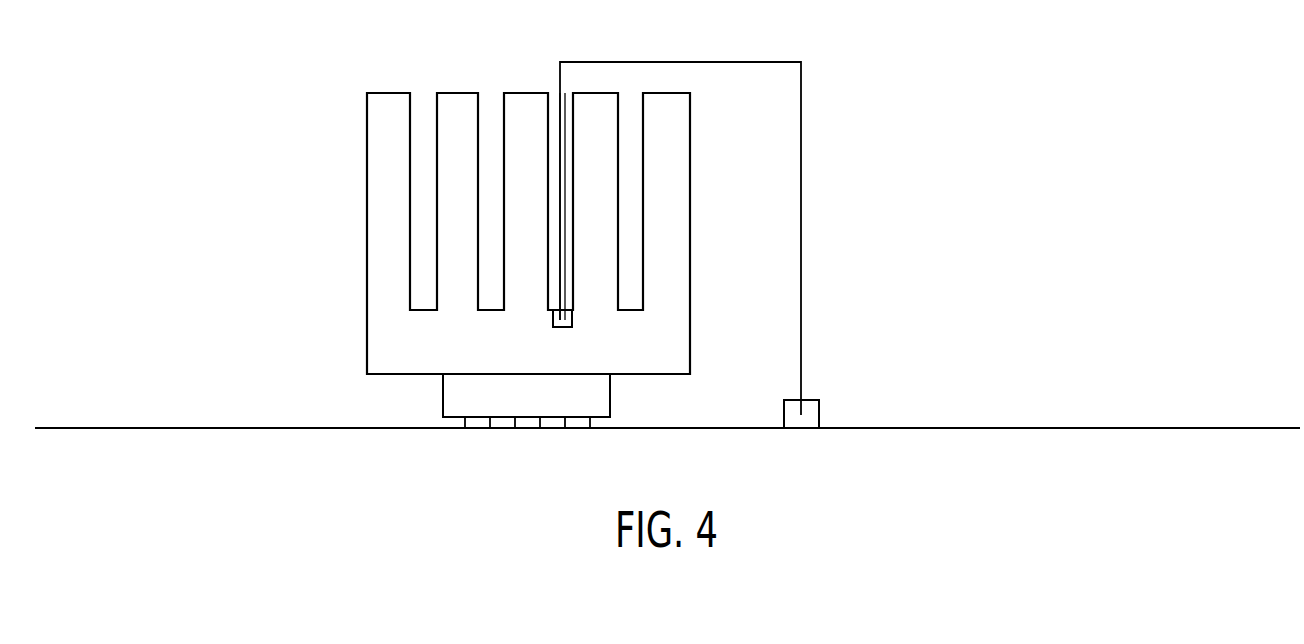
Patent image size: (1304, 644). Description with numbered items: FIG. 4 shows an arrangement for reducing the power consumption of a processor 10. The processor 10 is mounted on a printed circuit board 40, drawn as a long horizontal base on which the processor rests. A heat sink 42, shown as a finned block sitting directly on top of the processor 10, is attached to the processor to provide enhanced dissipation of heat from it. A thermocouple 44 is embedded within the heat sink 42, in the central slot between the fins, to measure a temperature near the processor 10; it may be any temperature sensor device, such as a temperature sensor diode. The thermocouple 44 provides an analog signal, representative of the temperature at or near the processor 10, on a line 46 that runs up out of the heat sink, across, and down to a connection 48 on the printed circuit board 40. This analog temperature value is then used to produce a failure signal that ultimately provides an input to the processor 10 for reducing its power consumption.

The processor 10 is at (442, 395).
The printed circuit board 40 is at (1060, 428).
The heat sink 42 is at (388, 93).
The thermocouple 44 is at (568, 320).
The line 46 is at (801, 190).
The connection 48 is at (819, 410).